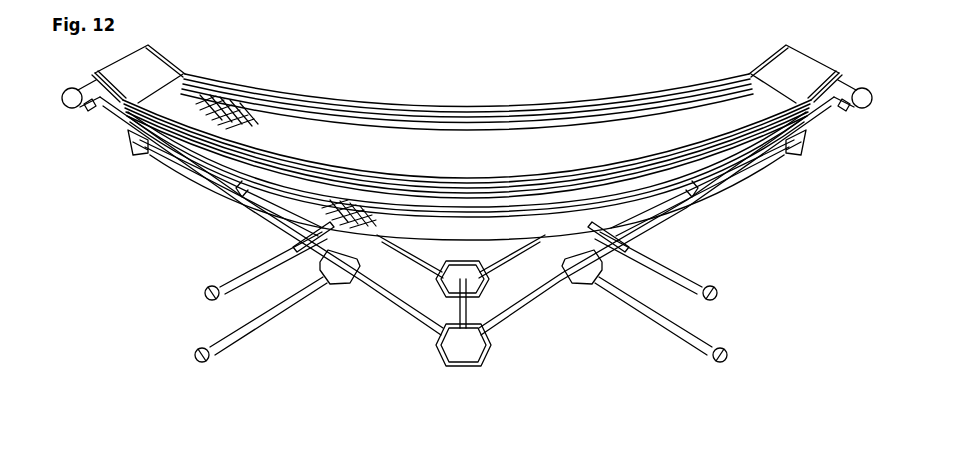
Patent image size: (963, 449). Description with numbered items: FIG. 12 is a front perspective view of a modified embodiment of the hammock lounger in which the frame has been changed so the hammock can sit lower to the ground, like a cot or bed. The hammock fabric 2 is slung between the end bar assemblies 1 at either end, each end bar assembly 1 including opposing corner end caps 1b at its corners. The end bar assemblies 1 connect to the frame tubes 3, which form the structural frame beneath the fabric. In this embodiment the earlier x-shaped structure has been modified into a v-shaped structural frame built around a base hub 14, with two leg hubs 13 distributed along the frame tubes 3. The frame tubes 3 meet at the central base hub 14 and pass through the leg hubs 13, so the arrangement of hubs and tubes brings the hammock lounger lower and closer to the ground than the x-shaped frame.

The end bar assembly 1 is at (55, 109).
The corner end cap 1b is at (88, 110).
The hammock body 2 is at (607, 150).
The frame tube 3 is at (246, 204).
The leg hub 13 is at (338, 272).
The base hub 14 is at (455, 354).